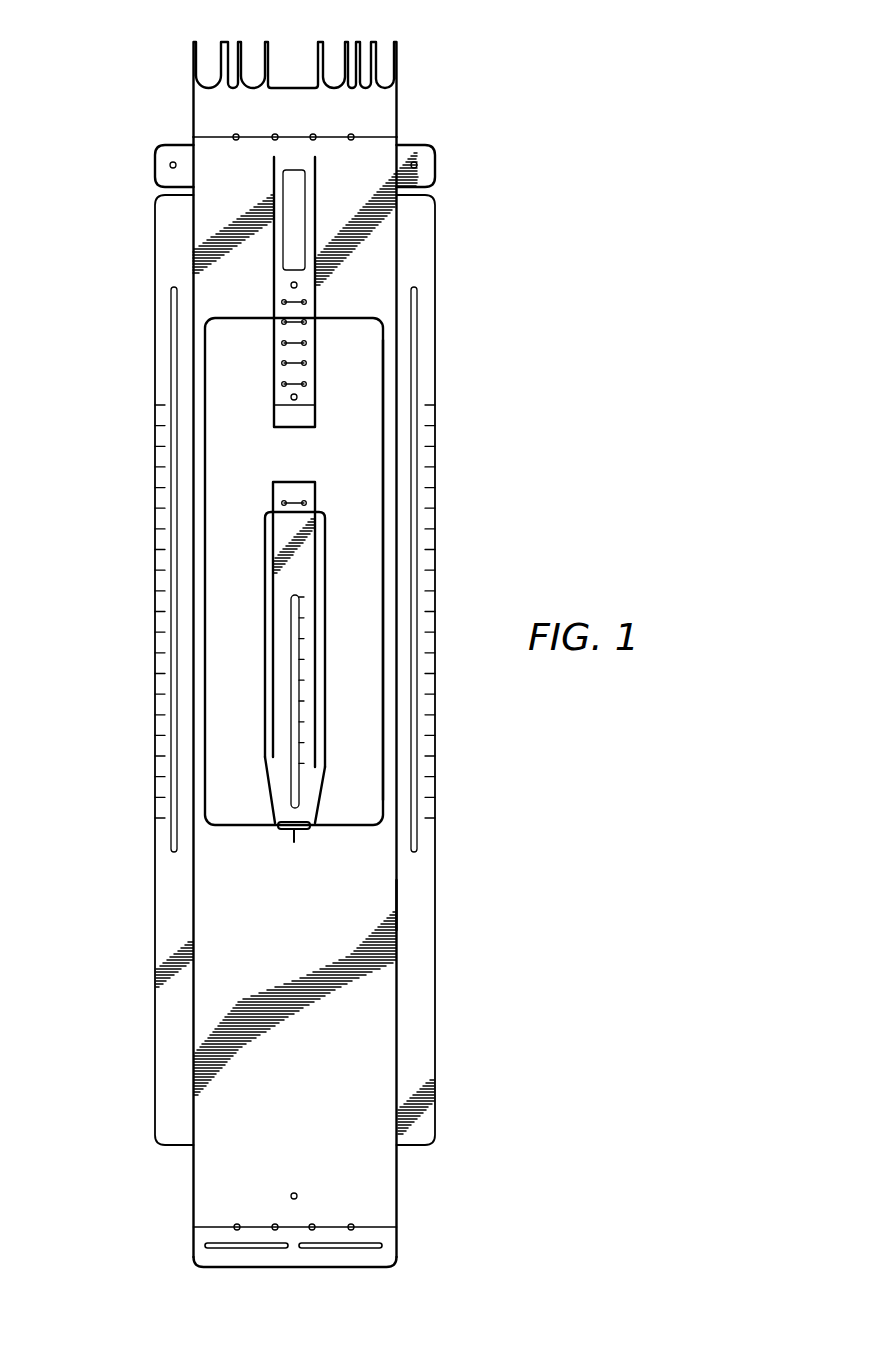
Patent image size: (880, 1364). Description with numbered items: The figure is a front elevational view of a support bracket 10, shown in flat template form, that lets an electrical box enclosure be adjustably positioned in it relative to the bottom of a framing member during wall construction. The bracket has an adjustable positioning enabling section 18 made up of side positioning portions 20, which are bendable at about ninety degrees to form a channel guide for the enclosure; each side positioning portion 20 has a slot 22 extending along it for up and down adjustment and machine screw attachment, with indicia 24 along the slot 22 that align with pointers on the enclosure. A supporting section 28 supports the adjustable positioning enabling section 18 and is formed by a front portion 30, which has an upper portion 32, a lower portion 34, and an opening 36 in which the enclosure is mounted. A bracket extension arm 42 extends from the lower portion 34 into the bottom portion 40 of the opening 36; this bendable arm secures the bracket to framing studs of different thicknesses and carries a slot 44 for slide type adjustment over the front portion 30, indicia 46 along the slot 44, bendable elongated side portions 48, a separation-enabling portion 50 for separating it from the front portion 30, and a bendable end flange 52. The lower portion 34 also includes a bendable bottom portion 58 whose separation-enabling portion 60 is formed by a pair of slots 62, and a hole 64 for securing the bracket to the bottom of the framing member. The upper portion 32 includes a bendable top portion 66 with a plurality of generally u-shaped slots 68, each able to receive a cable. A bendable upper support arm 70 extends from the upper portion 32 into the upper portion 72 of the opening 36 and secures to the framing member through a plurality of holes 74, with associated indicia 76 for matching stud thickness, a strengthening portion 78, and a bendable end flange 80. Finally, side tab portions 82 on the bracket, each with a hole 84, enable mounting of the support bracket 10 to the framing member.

The support bracket 10 is at (363, 1077).
The adjustable positioning enabling section 18 is at (417, 1040).
The side positioning portions 20 is at (176, 1027).
The slot 22 is at (176, 820).
The indicia 24 is at (185, 563).
The supporting section 28 is at (375, 905).
The front portion 30 is at (370, 988).
The upper portion 32 is at (200, 247).
The lower portion 34 is at (218, 1112).
The opening 36 is at (365, 518).
The bottom portion 40 is at (368, 707).
The bracket extension arm 42 is at (307, 815).
The slot 44 is at (293, 630).
The indicia 46 is at (293, 712).
The elongated side portions 48 is at (266, 757).
The separation-enabling portion 50 is at (294, 840).
The end flange 52 is at (302, 490).
The bottom portion 58 is at (202, 1258).
The separation-enabling portion 60 is at (378, 1245).
The slots 62 is at (248, 1249).
The hole 64 is at (298, 1196).
The top portion 66 is at (383, 115).
The slots 68 is at (207, 50).
The upper support arm 70 is at (313, 283).
The upper portion 72 is at (368, 383).
The holes 74 is at (290, 285).
The indicia 76 is at (293, 347).
The strengthening portion 78 is at (296, 241).
The end flange 80 is at (302, 418).
The side tab portions 82 is at (162, 147).
The hole 84 is at (169, 165).